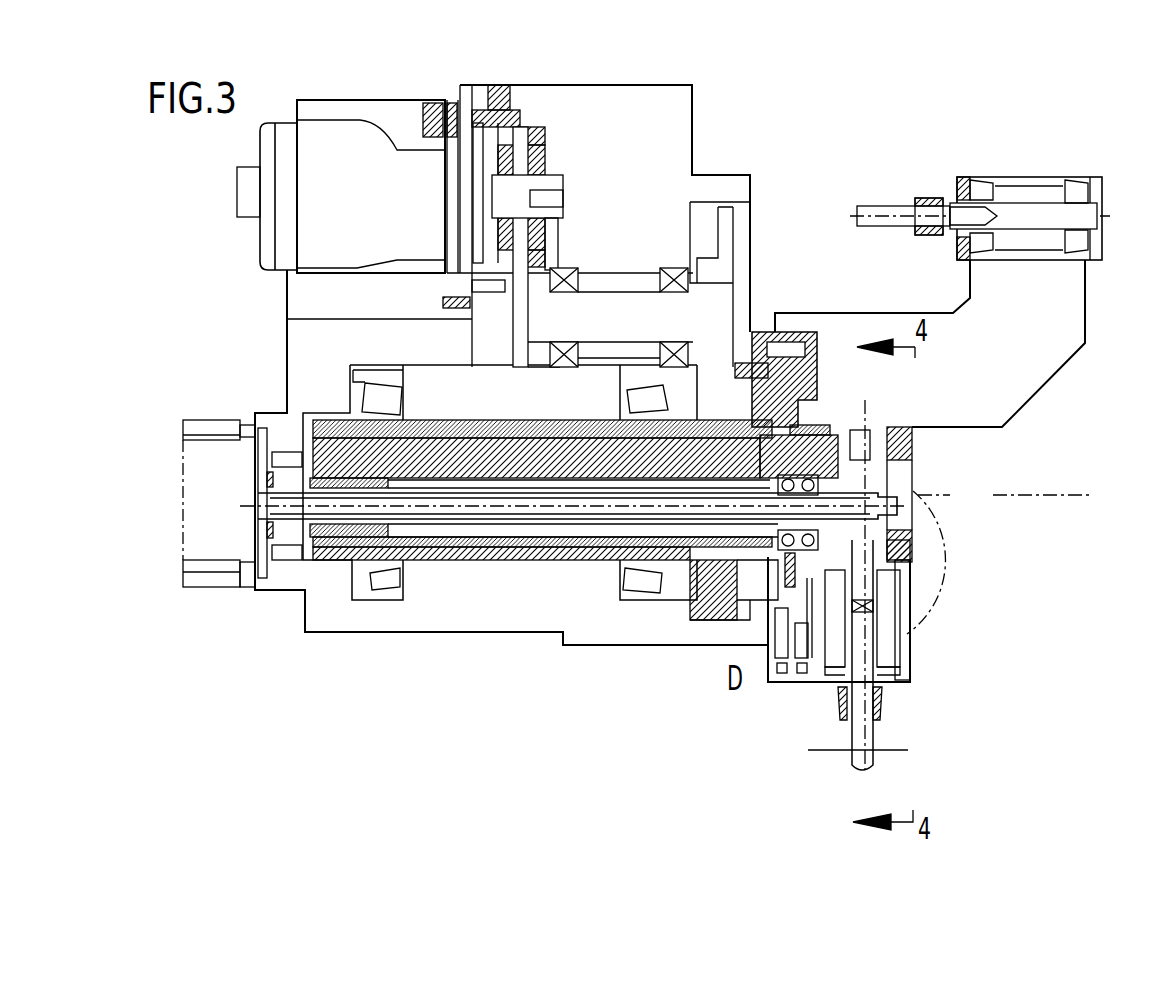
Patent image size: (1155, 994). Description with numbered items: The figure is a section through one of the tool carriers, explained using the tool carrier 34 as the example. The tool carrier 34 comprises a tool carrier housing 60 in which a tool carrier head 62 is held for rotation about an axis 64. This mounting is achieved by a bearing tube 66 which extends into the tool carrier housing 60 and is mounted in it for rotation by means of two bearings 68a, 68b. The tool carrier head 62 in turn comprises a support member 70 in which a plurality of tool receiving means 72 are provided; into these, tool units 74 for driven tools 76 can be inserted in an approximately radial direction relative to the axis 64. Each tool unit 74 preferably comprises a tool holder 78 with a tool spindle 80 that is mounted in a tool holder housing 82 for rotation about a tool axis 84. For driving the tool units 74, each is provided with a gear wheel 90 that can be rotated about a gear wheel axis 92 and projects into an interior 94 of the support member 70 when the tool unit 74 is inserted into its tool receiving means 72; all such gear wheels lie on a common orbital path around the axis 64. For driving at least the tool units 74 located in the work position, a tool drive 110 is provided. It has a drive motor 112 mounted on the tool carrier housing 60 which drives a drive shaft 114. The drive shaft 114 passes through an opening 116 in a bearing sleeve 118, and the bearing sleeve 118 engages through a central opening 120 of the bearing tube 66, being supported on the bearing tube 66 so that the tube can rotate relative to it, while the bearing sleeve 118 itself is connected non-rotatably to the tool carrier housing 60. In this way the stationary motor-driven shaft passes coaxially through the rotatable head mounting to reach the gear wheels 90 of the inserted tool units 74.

The tool carrier 34 is at (742, 134).
The tool carrier housing 60 is at (312, 352).
The tool carrier head 62 is at (929, 612).
The axis 64 is at (1040, 496).
The bearing tube 66 is at (495, 560).
The bearing 68a is at (372, 600).
The bearing 68b is at (630, 600).
The support member 70 is at (933, 438).
The tool receiving means 72 is at (843, 402).
The tool unit 74 is at (829, 302).
The driven tool 76 is at (886, 207).
The tool holder 78 is at (1028, 372).
The tool spindle 80 is at (1007, 190).
The tool holder housing 82 is at (905, 658).
The tool axis 84 is at (1047, 216).
The gear wheel 90 is at (900, 457).
The gear wheel axis 92 is at (878, 482).
The interior 94 is at (910, 510).
The tool drive 110 is at (760, 534).
The drive motor 112 is at (225, 540).
The drive shaft 114 is at (447, 563).
The opening 116 is at (558, 560).
The bearing sleeve 118 is at (433, 465).
The central opening 120 is at (573, 447).